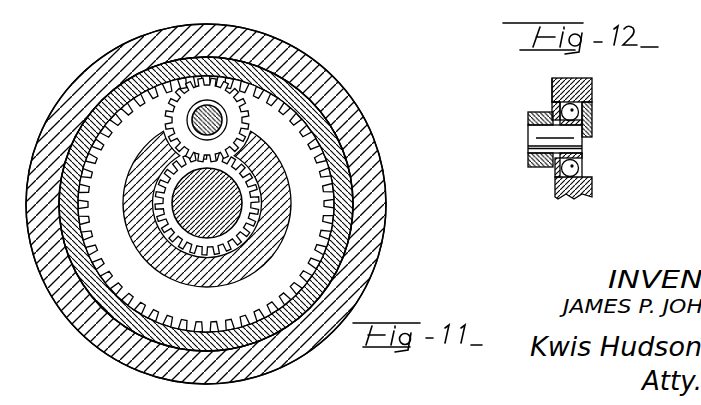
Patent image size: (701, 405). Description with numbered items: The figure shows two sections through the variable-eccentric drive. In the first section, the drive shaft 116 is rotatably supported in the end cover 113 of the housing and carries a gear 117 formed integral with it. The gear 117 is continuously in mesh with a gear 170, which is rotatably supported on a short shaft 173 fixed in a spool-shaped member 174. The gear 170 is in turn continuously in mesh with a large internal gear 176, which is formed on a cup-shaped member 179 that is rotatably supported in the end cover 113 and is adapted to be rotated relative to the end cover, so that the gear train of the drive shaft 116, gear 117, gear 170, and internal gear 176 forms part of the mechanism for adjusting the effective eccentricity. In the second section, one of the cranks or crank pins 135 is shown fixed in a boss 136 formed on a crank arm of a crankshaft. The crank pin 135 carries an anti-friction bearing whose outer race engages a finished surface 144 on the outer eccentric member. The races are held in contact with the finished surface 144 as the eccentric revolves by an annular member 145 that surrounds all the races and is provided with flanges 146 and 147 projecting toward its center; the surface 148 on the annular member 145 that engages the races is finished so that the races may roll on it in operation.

In FIG. 11, the end cover 113 is at (362, 123).
In FIG. 11, the cup-shaped member 179 is at (348, 184).
In FIG. 11, the internal gear 176 is at (253, 318).
In FIG. 11, the spool-shaped member 174 is at (268, 247).
In FIG. 11, the gear 117 is at (253, 205).
In FIG. 11, the drive shaft 116 is at (177, 197).
In FIG. 11, the gear 170 is at (240, 124).
In FIG. 11, the short shaft 173 is at (194, 120).
In FIG. 12, the annular member 145 is at (592, 83).
In FIG. 12, the surface 148 is at (567, 89).
In FIG. 12, the flange 147 is at (592, 113).
In FIG. 12, the flange 146 is at (553, 96).
In FIG. 12, the crank pin 135 is at (573, 140).
In FIG. 12, the boss 136 is at (530, 166).
In FIG. 12, the finished surface 144 is at (568, 199).